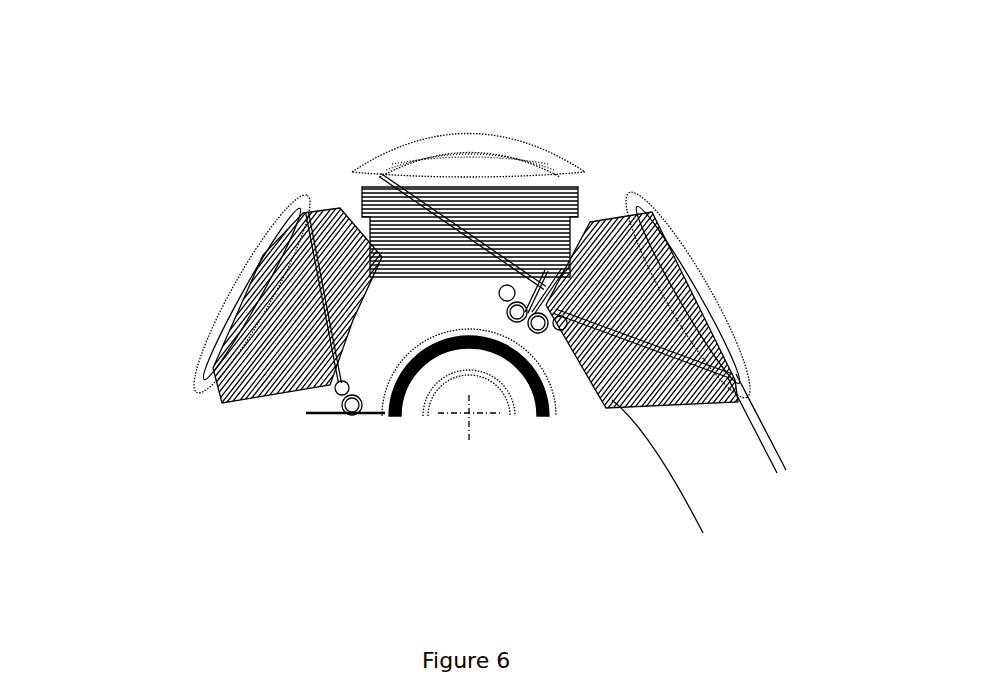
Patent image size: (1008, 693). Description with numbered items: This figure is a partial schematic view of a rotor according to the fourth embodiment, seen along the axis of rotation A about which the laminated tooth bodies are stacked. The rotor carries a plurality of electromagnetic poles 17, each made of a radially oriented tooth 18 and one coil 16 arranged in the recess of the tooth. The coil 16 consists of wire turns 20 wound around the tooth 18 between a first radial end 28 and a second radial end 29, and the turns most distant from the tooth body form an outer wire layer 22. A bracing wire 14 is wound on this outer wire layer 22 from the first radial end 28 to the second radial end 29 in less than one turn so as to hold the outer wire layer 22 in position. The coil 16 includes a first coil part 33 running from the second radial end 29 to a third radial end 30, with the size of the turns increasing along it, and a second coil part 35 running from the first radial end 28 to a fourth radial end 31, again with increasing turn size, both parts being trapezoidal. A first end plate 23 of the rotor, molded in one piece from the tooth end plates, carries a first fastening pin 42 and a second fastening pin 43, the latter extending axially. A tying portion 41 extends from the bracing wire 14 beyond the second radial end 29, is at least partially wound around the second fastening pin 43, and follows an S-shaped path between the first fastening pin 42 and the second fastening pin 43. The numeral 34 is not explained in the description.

The bracing wire 14 is at (650, 345).
The coil 16 is at (588, 217).
The electromagnetic pole 17 is at (452, 117).
The tooth 18 is at (648, 212).
The wire turns 20 is at (617, 210).
The outer wire layer 22 is at (672, 380).
The first end plate 23 is at (373, 340).
The first radial end 28 is at (775, 463).
The second radial end 29 is at (705, 533).
The third radial end 30 is at (752, 480).
The fourth radial end 31 is at (772, 480).
The first coil part 33 is at (590, 270).
The wire 34 is at (598, 208).
The second coil part 35 is at (623, 212).
The tying portion 41 is at (527, 336).
The first fastening pin 42 is at (561, 331).
The second fastening pin 43 is at (538, 331).
The axis of rotation A is at (470, 416).